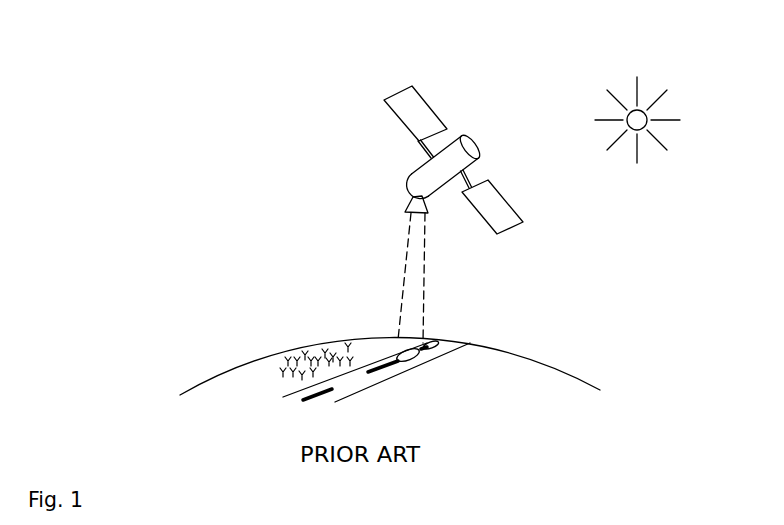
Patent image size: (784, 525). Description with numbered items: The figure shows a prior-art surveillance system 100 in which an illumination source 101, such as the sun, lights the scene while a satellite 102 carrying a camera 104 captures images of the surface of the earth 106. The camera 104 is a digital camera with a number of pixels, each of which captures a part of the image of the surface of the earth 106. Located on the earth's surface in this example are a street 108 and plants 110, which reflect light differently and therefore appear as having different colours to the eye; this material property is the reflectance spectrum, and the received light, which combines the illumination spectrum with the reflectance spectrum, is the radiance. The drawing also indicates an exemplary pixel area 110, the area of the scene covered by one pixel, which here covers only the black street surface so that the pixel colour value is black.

The surveillance system 100 is at (203, 60).
The illumination source 101 is at (638, 108).
The satellite 102 is at (478, 143).
The camera 104 is at (407, 208).
The surface of the earth 106 is at (262, 357).
The street 108 is at (360, 383).
The plants 110 is at (283, 378).